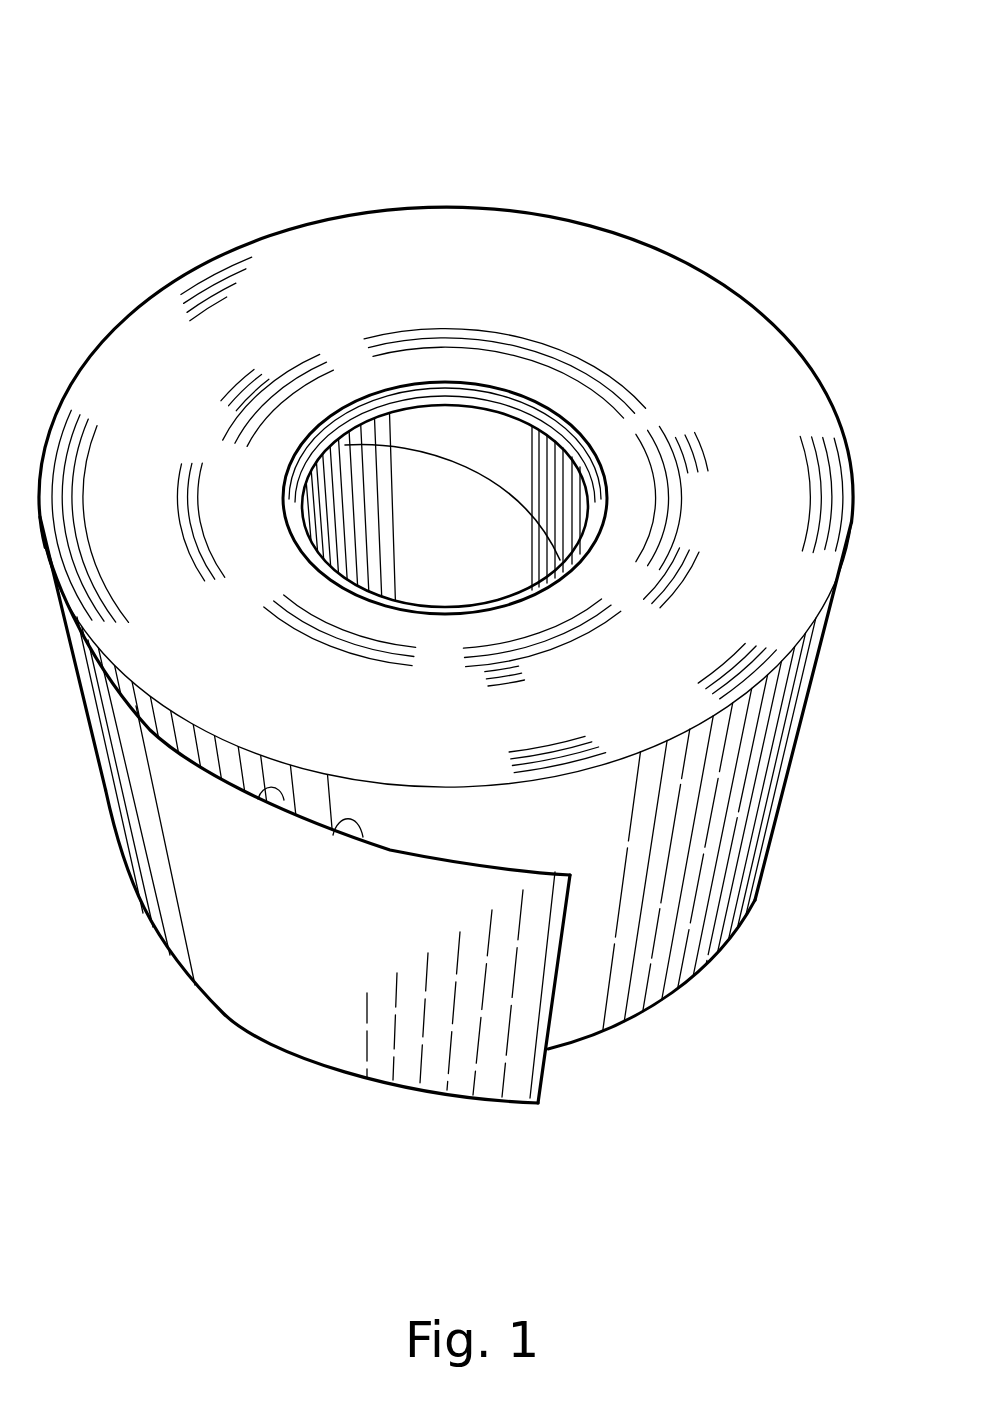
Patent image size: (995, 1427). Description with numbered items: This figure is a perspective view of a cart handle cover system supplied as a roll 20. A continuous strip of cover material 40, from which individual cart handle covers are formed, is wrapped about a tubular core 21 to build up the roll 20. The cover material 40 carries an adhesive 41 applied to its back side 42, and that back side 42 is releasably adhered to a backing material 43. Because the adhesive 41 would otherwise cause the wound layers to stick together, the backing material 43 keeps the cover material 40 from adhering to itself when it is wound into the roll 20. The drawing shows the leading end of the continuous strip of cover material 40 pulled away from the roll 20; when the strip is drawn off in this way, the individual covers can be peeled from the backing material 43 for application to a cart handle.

The roll 20 is at (585, 118).
The tubular core 21 is at (497, 427).
The cover material 40 is at (327, 1042).
The adhesive 41 is at (342, 826).
The back side 42 is at (260, 789).
The backing material 43 is at (556, 1002).